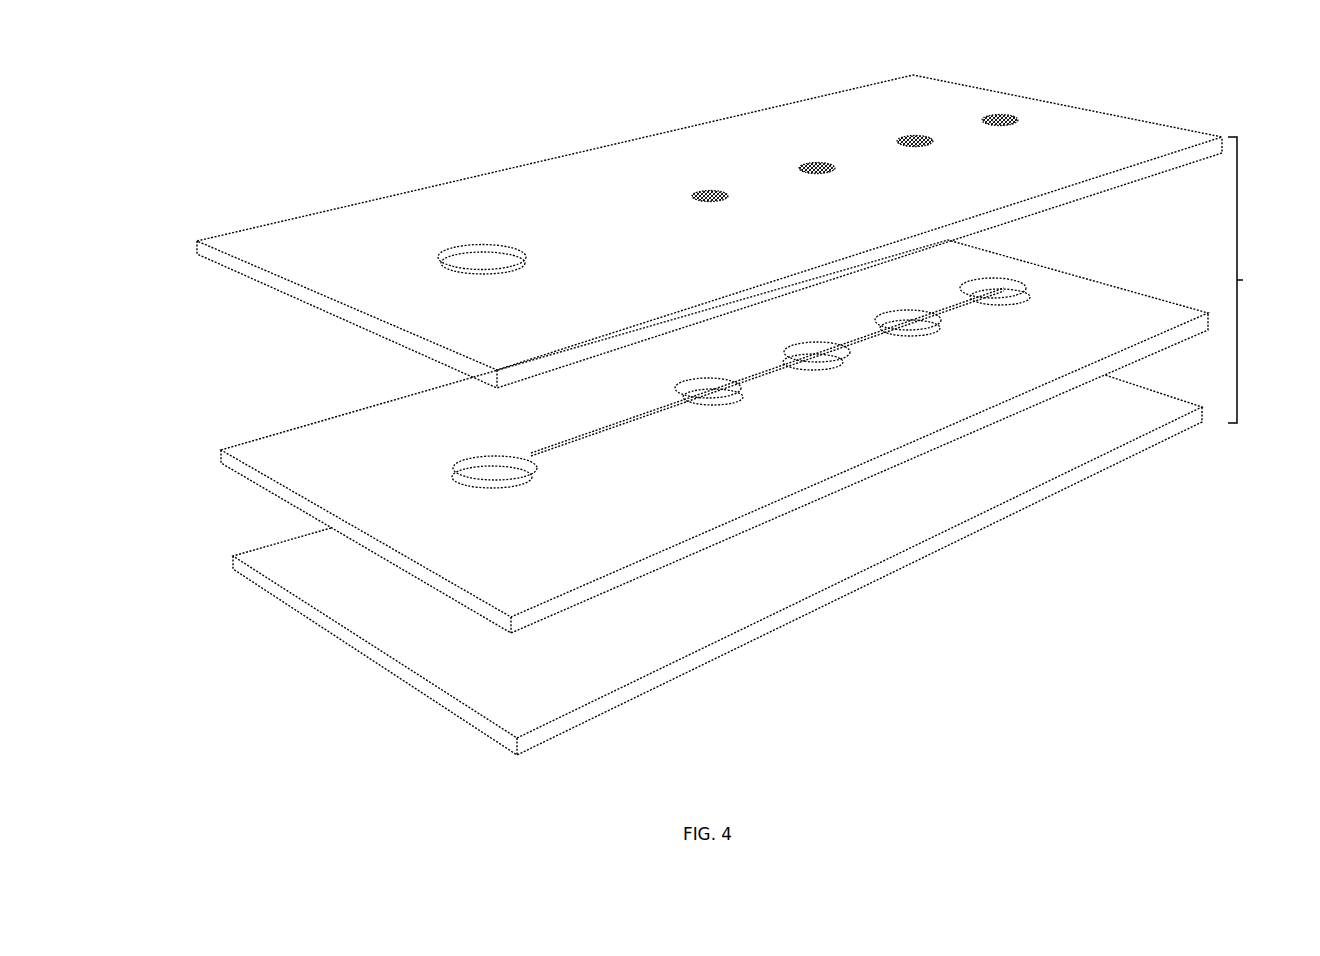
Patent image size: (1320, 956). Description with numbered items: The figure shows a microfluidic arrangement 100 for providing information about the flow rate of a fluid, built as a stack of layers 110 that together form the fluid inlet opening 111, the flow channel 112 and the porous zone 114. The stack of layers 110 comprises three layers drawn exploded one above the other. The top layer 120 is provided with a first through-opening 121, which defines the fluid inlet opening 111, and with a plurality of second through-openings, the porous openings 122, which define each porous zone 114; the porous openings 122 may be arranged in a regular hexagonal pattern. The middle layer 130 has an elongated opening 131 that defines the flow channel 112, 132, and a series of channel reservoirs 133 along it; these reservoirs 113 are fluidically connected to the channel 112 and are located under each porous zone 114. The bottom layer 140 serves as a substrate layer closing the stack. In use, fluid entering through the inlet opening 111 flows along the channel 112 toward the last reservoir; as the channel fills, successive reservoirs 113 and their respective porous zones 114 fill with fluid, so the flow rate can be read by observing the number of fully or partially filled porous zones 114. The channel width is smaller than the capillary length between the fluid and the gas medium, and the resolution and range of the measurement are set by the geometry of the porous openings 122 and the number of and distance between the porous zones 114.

The arrangement 100 is at (163, 65).
The stack of layers 110 is at (1238, 218).
The top layer 120 is at (196, 247).
The middle layer 130 is at (219, 453).
The bottom layer 140 is at (231, 561).
The fluid inlet opening 111 is at (429, 301).
The first through-opening 121 is at (473, 253).
The elongated opening 131 is at (508, 459).
The flow channel 112 is at (767, 372).
The flow channel 132 is at (605, 430).
The reservoir 113 is at (921, 305).
The channel reservoir 133 is at (990, 287).
The porous zone 114 is at (779, 135).
The porous opening 122 is at (987, 119).